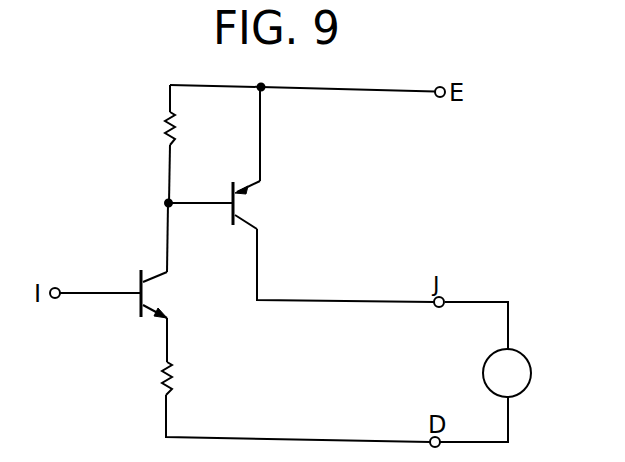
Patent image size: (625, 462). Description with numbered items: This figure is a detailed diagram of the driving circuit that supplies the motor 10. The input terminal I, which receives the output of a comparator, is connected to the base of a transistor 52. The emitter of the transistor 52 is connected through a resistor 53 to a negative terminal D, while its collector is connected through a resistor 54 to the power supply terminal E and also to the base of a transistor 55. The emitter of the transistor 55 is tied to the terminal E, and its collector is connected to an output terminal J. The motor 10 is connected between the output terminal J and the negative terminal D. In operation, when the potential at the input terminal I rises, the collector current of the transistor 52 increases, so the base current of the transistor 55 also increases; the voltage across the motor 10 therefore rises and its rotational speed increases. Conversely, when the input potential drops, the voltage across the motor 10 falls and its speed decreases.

The transistor 52 is at (146, 293).
The resistor 53 is at (172, 380).
The resistor 54 is at (175, 133).
The transistor 55 is at (236, 200).
The motor 10 is at (483, 368).